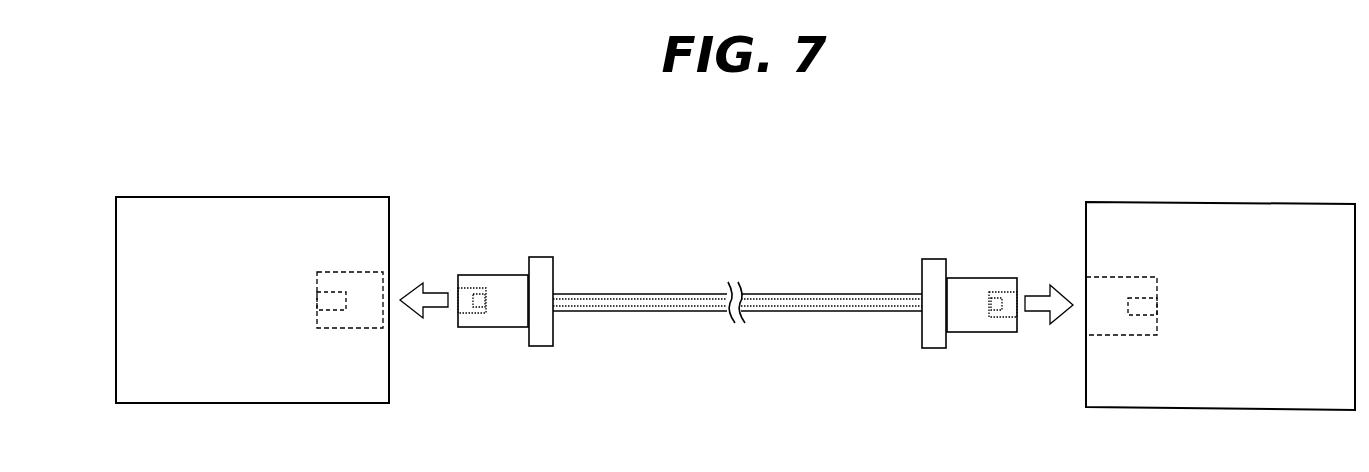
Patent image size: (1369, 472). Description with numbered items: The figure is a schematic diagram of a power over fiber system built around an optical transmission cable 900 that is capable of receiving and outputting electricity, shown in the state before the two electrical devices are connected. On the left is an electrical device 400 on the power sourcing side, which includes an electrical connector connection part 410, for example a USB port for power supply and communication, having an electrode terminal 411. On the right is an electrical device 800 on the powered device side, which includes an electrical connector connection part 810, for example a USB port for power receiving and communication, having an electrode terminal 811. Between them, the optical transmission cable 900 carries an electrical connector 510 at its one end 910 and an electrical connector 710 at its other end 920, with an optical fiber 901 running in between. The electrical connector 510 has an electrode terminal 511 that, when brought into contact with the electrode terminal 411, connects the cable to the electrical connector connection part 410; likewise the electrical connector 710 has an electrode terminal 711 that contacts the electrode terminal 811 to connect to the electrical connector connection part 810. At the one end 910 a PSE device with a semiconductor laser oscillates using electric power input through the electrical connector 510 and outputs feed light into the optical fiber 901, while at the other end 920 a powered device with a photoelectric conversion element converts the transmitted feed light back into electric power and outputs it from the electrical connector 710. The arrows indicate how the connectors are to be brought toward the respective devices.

The electrical device 400 is at (170, 196).
The electrical connector connection part 410 is at (351, 272).
The electrode terminal 411 is at (330, 292).
The electrical connector 510 is at (482, 275).
The electrode terminal 511 is at (479, 308).
The one end 910 is at (528, 246).
The optical transmission cable 900 is at (737, 265).
The optical fiber 901 is at (657, 305).
The other end 920 is at (948, 246).
The electrical connector 710 is at (975, 278).
The electrode terminal 711 is at (995, 311).
The electrical device 800 is at (1302, 203).
The electrical connector connection part 810 is at (1122, 277).
The electrode terminal 811 is at (1143, 297).